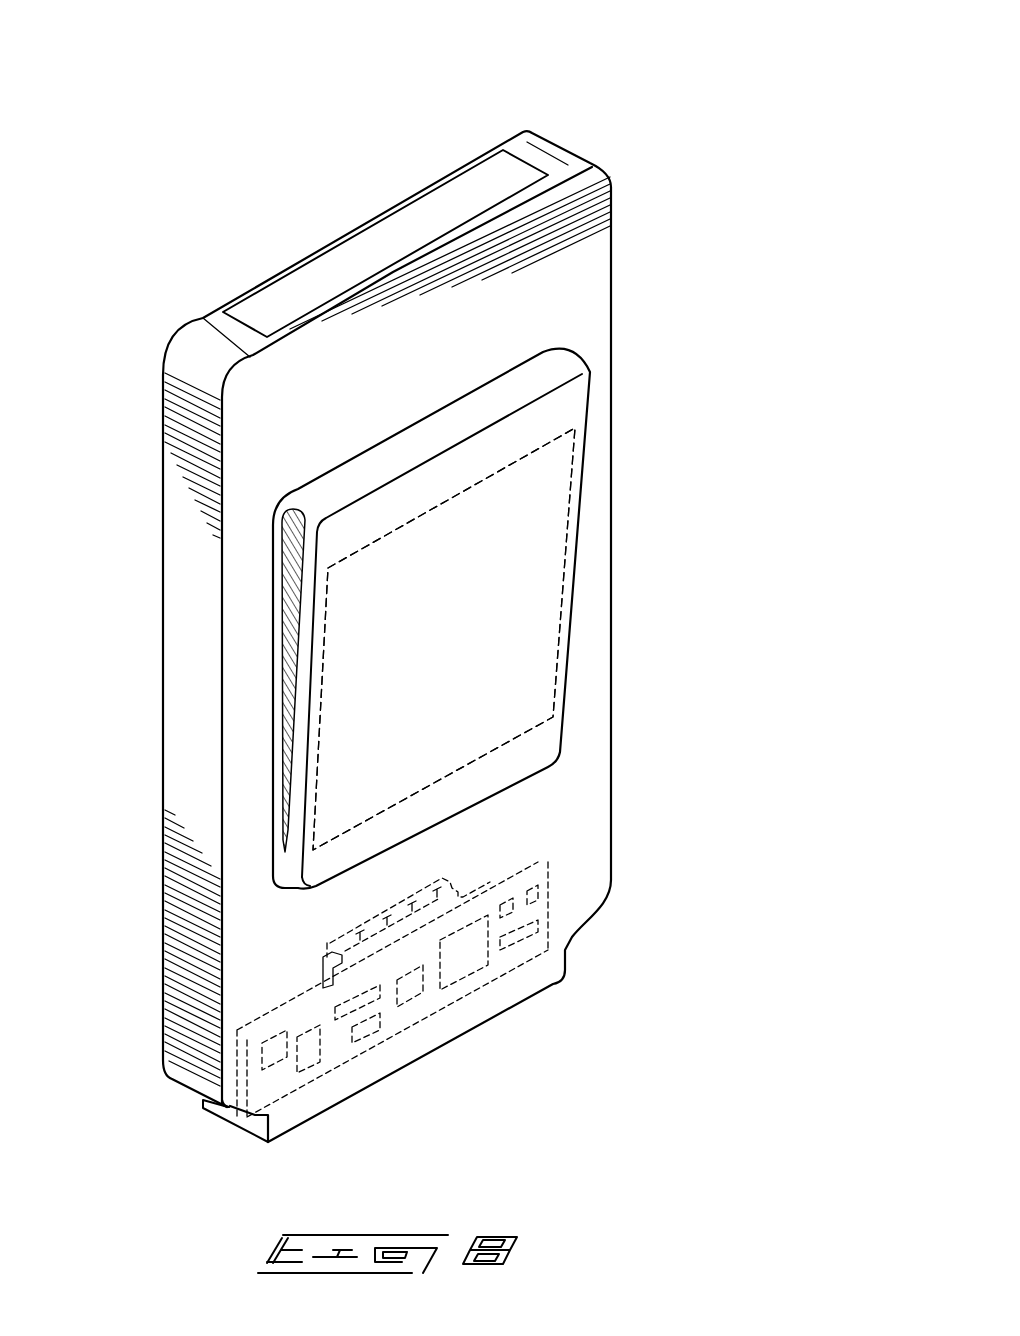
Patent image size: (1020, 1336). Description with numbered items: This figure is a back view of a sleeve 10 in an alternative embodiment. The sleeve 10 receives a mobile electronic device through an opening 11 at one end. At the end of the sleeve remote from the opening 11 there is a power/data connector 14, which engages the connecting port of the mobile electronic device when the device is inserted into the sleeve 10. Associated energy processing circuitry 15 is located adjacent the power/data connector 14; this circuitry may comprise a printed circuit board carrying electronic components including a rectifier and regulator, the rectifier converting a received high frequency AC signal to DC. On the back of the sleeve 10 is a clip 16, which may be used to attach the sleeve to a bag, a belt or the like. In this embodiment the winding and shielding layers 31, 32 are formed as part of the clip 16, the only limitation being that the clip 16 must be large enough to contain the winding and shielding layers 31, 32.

The sleeve 10 is at (157, 316).
The opening 11 is at (458, 203).
The clip 16 is at (592, 323).
The winding layer 31 is at (482, 589).
The shielding layer 32 is at (444, 639).
The power/data connector 14 is at (462, 870).
The energy processing circuitry 15 is at (573, 960).